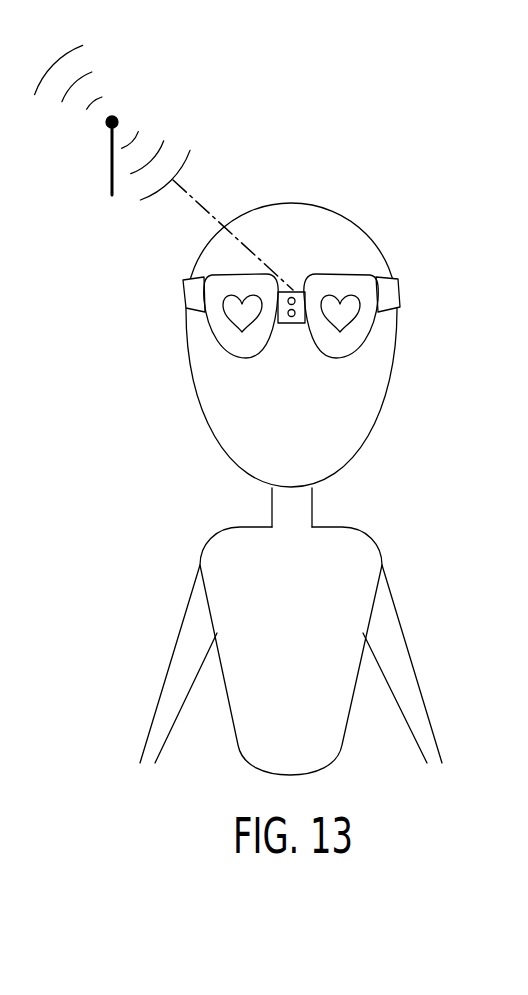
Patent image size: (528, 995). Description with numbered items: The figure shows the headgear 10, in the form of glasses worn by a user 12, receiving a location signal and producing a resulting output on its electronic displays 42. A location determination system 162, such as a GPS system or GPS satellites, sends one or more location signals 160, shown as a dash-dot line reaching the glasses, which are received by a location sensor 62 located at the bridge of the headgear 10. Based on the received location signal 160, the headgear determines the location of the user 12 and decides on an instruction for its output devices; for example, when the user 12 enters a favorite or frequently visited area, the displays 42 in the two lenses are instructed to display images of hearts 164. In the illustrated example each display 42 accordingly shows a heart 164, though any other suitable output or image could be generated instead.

The headgear 10 is at (306, 288).
The user 12 is at (370, 543).
The electronic displays 42 is at (199, 342).
The location sensor 62 is at (295, 292).
The location signal 160 is at (194, 194).
The location determination system 162 is at (112, 165).
The hearts 164 is at (237, 325).